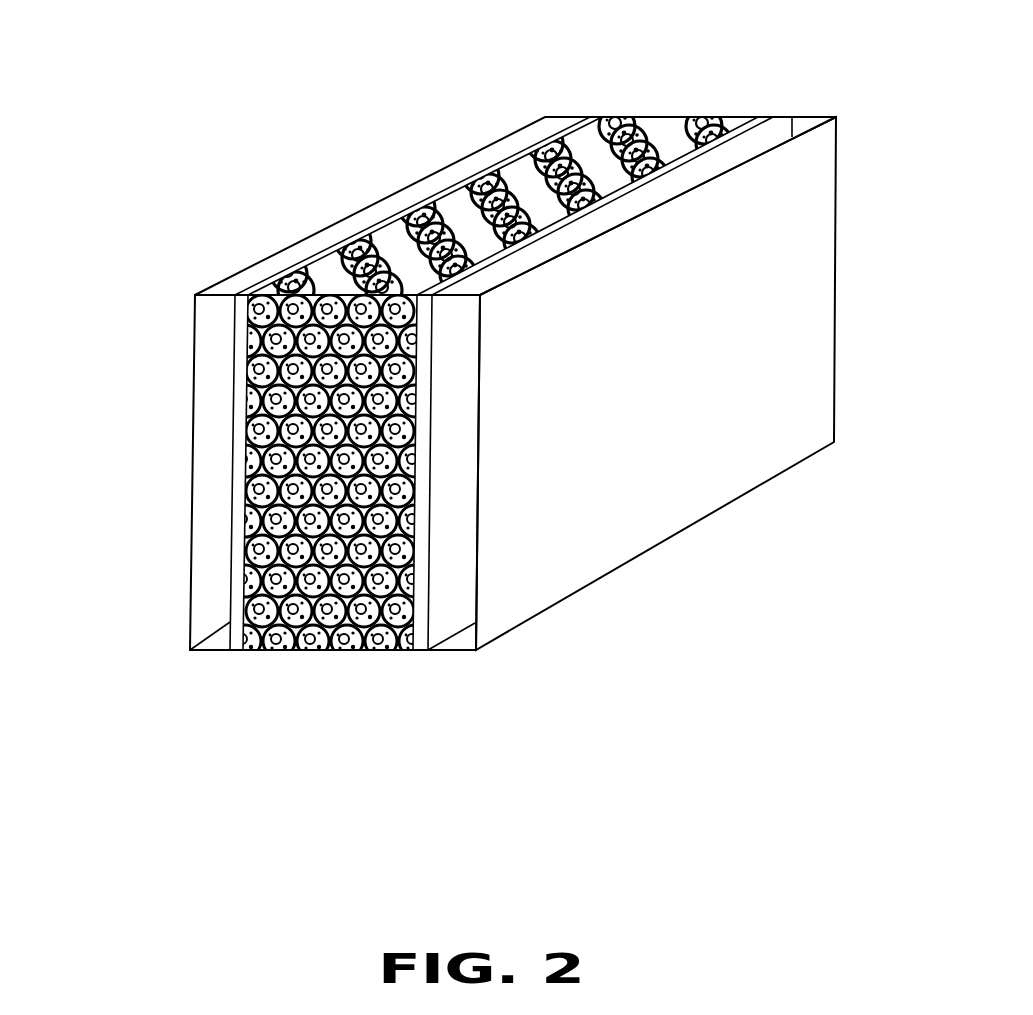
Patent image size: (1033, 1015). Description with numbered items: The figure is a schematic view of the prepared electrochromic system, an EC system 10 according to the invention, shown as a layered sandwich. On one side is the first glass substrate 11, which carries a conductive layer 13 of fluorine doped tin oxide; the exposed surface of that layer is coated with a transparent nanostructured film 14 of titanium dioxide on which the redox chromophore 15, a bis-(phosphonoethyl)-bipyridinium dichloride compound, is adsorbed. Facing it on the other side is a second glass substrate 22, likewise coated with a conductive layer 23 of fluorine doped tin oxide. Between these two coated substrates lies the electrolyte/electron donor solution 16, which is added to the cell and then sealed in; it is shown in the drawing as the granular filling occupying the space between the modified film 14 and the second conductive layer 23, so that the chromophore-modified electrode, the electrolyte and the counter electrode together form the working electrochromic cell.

The EC system 10 is at (150, 479).
The first glass substrate 11 is at (453, 636).
The conductive layer 13 is at (418, 670).
The transparent nanostructured film 14 is at (597, 117).
The redox chromophore 15 is at (323, 287).
The electrolyte/electron donor solution 16 is at (343, 260).
The second glass substrate 22 is at (209, 636).
The conductive layer 23 is at (235, 670).